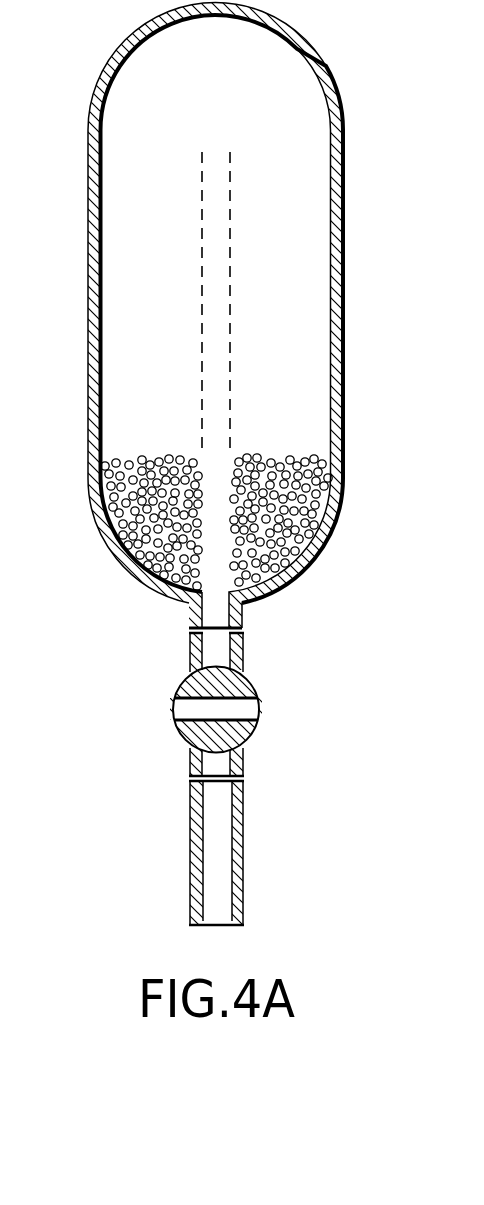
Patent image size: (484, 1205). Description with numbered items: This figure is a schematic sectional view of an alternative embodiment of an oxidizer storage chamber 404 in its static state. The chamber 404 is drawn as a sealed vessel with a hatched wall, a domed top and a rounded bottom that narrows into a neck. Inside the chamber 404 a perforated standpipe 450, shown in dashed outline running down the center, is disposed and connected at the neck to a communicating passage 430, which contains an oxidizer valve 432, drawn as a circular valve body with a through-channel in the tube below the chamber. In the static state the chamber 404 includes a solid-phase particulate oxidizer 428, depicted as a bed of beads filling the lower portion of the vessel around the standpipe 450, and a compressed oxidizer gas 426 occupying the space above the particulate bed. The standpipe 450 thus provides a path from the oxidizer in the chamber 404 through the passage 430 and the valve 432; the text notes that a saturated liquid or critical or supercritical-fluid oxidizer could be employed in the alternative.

The oxidizer storage chamber 404 is at (298, 36).
The compressed oxidizer gas 426 is at (135, 65).
The perforated standpipe 450 is at (230, 200).
The solid-phase particulate oxidizer 428 is at (150, 456).
The communicating passage 430 is at (232, 652).
The oxidizer valve 432 is at (247, 692).